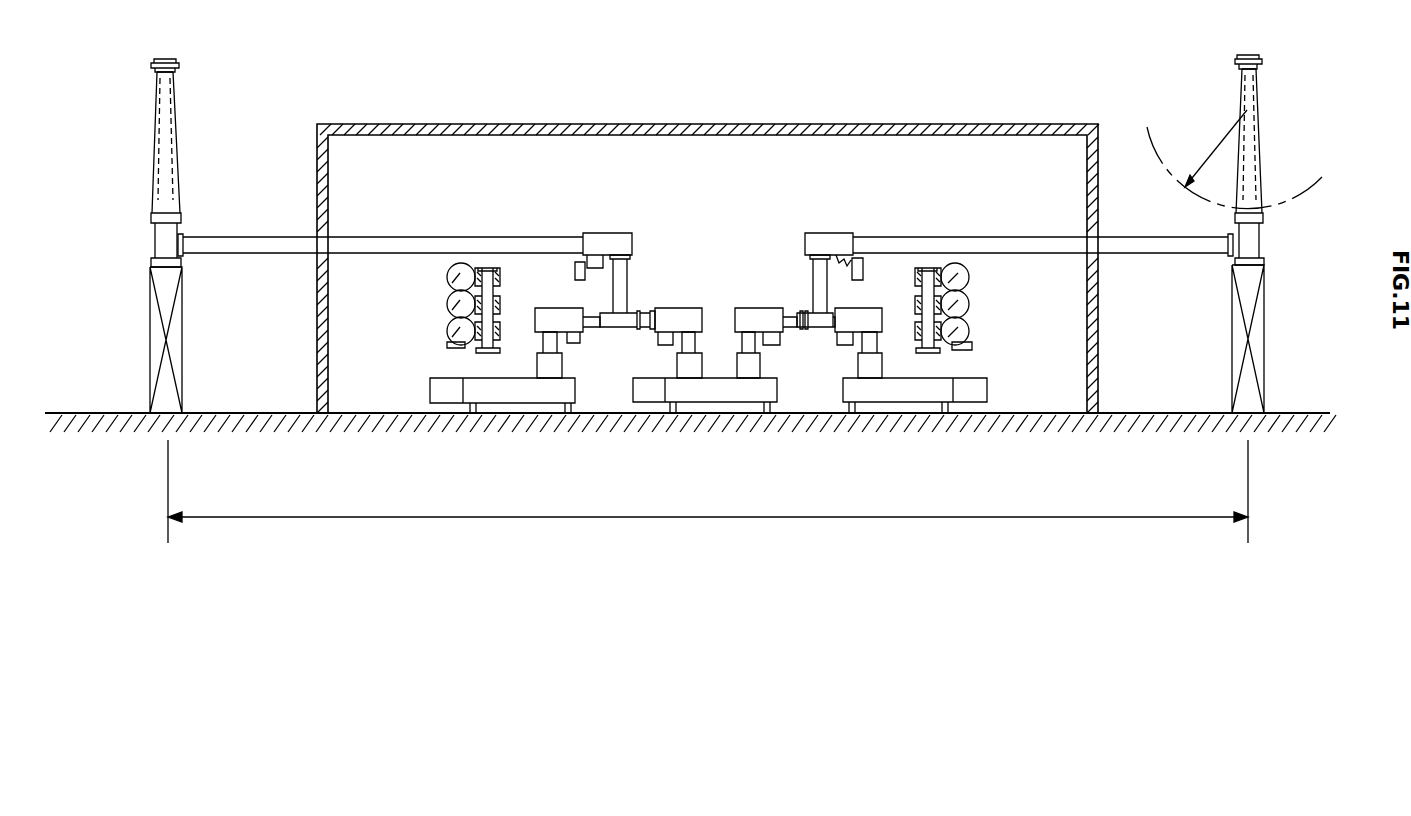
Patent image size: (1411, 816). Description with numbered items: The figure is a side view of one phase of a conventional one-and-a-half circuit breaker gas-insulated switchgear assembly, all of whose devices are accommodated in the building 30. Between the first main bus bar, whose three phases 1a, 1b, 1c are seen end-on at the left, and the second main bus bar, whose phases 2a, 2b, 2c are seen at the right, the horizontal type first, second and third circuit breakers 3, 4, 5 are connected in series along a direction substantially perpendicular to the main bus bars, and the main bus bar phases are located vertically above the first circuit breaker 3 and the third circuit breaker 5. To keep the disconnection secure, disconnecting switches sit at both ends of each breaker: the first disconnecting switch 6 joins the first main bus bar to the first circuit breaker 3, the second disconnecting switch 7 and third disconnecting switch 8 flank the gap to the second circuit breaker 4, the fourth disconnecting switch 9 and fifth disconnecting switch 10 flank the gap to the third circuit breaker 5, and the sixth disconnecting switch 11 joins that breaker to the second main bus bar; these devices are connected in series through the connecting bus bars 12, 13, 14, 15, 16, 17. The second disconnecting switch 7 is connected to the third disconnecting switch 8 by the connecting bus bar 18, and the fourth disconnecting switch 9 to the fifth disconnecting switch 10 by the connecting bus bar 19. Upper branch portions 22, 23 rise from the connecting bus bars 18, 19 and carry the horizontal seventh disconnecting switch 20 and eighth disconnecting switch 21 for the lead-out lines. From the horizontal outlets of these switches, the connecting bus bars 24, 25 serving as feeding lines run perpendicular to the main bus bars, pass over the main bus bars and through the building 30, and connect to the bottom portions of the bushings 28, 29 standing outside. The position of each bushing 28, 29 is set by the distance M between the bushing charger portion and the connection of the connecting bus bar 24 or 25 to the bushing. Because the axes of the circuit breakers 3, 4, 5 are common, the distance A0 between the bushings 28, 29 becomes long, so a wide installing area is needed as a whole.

The phase of the first main bus bar 1a is at (448, 279).
The phase of the first main bus bar 1b is at (448, 306).
The phase of the first main bus bar 1c is at (448, 333).
The phase of the second main bus bar 2a is at (970, 277).
The phase of the second main bus bar 2b is at (970, 304).
The phase of the second main bus bar 2c is at (970, 331).
The first circuit breaker 3 is at (527, 390).
The second circuit breaker 4 is at (713, 390).
The third circuit breaker 5 is at (900, 390).
The first disconnecting switch 6 is at (467, 275).
The second disconnecting switch 7 is at (558, 317).
The third disconnecting switch 8 is at (688, 312).
The fourth disconnecting switch 9 is at (747, 314).
The fifth disconnecting switch 10 is at (862, 315).
The sixth disconnecting switch 11 is at (957, 271).
The connecting bus bar 12 is at (495, 300).
The connecting bus bar 13 is at (560, 346).
The connecting bus bar 14 is at (689, 347).
The connecting bus bar 15 is at (756, 346).
The connecting bus bar 16 is at (872, 346).
The connecting bus bar 17 is at (924, 304).
The connecting bus bar 18 is at (620, 324).
The connecting bus bar 19 is at (808, 330).
The seventh disconnecting switch 20 is at (612, 232).
The eighth disconnecting switch 21 is at (831, 232).
The upper branch portion 22 is at (627, 276).
The upper branch portion 23 is at (816, 272).
The connecting bus bar 24 is at (517, 246).
The connecting bus bar 25 is at (950, 241).
The bushing 28 is at (179, 92).
The bushing 29 is at (1238, 86).
The building 30 is at (429, 128).
The distance between the bushings A0 is at (708, 491).
The distance M is at (1234, 159).